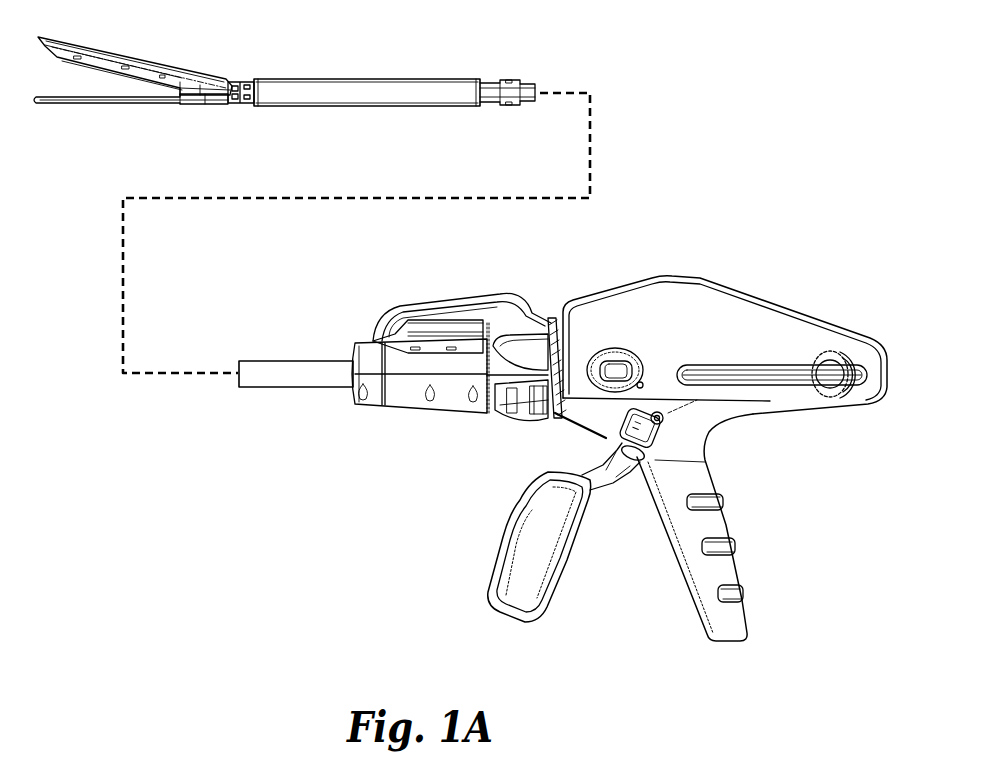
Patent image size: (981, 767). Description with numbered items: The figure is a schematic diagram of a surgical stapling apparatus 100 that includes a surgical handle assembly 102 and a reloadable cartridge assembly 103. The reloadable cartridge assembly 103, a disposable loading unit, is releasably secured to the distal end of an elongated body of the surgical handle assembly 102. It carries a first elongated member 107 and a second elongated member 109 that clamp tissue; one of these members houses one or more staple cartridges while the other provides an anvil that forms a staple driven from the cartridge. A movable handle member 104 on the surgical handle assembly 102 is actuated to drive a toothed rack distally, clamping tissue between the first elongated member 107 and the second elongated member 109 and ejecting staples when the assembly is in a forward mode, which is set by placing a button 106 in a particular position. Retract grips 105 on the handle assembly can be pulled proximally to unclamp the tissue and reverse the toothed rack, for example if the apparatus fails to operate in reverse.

The surgical stapling apparatus 100 is at (783, 61).
The surgical handle assembly 102 is at (735, 294).
The reloadable cartridge assembly 103 is at (398, 87).
The movable handle member 104 is at (514, 525).
The retract grips 105 is at (840, 359).
The button 106 is at (613, 370).
The first elongated member 107 is at (132, 60).
The second elongated member 109 is at (123, 102).